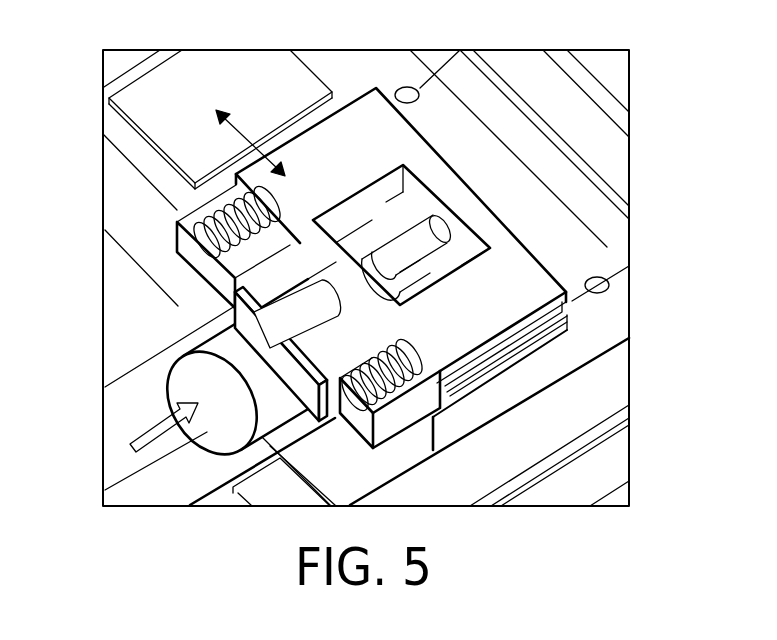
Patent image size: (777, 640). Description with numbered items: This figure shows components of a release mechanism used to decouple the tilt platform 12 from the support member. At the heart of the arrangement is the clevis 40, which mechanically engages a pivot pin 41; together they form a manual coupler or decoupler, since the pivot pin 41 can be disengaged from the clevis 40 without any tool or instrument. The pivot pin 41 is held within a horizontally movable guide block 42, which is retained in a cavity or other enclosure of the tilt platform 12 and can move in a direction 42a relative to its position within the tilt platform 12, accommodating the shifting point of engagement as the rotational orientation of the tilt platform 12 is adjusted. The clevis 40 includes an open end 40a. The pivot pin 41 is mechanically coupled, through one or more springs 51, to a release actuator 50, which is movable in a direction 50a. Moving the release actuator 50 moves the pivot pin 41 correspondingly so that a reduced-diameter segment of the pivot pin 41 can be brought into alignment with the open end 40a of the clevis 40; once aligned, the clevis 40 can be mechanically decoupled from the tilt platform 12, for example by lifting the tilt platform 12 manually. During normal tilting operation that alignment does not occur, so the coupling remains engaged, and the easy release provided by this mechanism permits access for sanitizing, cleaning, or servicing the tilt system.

The tilt platform 12 is at (605, 150).
The clevis 40 is at (380, 214).
The open end 40a is at (374, 220).
The pivot pin 41 is at (313, 298).
The horizontally movable guide block 42 is at (350, 108).
The direction 42a is at (240, 128).
The release actuator 50 is at (200, 356).
The direction 50a is at (153, 423).
The spring 51 is at (188, 219).